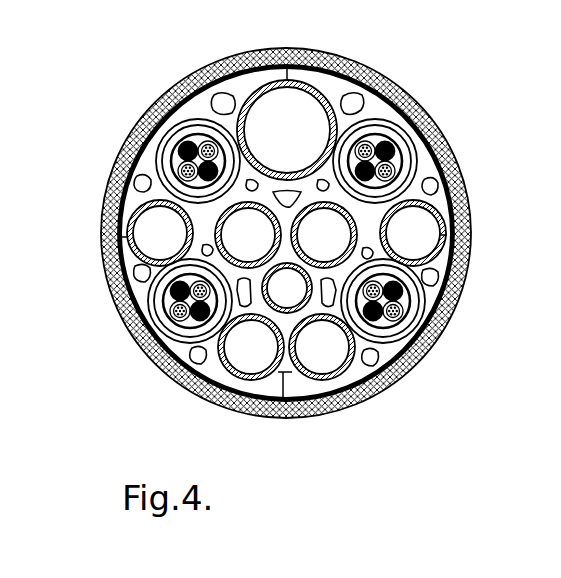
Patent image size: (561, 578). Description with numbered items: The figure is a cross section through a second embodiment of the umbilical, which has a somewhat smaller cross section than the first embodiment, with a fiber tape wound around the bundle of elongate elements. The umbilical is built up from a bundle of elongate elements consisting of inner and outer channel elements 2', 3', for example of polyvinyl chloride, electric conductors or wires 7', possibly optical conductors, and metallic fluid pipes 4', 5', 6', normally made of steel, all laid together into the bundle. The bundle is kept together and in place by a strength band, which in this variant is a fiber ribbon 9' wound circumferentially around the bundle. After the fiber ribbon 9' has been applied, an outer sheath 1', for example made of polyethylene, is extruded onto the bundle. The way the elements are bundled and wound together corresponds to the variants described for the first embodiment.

The outer sheath 1' is at (305, 233).
The inner channel element 2' is at (345, 229).
The outer channel element 3' is at (335, 290).
The metallic fluid pipe 4' is at (242, 232).
The metallic fluid pipe 5' is at (336, 355).
The metallic fluid pipe 6' is at (232, 98).
The electric conductors 7' is at (249, 199).
The fiber ribbon 9' is at (303, 233).